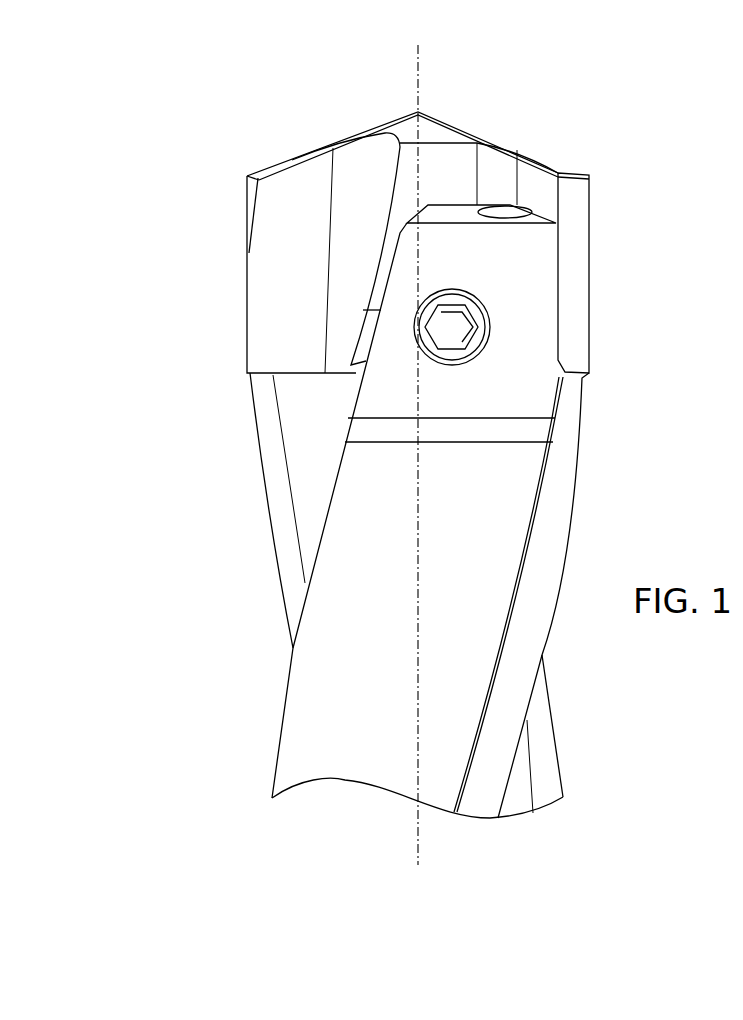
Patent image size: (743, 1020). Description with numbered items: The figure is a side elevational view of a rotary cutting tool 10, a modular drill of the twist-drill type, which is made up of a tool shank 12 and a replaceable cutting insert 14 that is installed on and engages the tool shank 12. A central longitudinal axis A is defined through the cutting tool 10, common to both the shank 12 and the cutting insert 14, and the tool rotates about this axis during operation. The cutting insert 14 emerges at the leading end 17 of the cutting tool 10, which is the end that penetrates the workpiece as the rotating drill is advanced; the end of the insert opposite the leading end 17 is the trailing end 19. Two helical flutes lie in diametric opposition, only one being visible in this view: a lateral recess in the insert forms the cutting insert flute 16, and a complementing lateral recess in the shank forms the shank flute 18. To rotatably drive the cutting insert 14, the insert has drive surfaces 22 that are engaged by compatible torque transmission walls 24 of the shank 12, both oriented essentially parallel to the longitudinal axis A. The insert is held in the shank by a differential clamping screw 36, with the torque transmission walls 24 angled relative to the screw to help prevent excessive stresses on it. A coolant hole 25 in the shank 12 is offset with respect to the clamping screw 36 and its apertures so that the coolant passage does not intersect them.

The rotary cutting tool 10 is at (218, 102).
The tool shank 12 is at (262, 772).
The cutting insert 14 is at (226, 260).
The cutting insert flute 16 is at (281, 306).
The leading end 17 is at (412, 108).
The shank flute 18 is at (306, 449).
The trailing end 19 is at (264, 383).
The drive surface 22 is at (542, 185).
The torque transmission wall 24 is at (560, 263).
The coolant hole 25 is at (505, 216).
The clamping screw 36 is at (488, 340).
The central longitudinal axis A is at (421, 70).